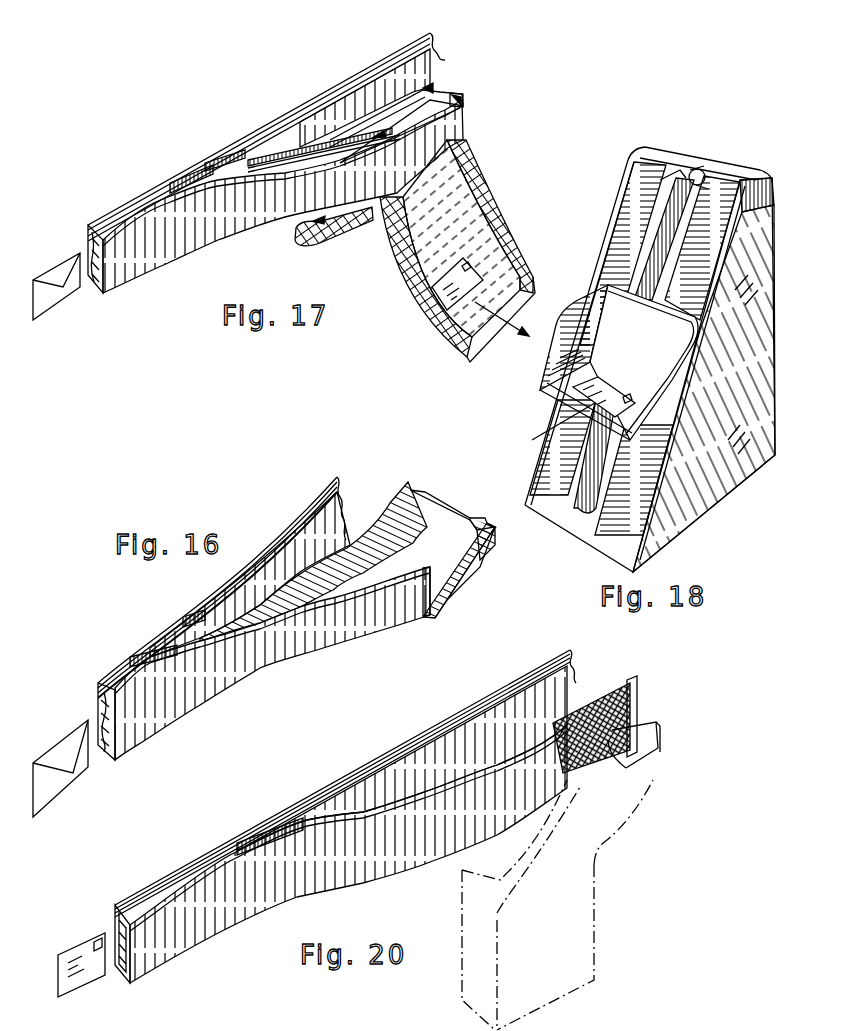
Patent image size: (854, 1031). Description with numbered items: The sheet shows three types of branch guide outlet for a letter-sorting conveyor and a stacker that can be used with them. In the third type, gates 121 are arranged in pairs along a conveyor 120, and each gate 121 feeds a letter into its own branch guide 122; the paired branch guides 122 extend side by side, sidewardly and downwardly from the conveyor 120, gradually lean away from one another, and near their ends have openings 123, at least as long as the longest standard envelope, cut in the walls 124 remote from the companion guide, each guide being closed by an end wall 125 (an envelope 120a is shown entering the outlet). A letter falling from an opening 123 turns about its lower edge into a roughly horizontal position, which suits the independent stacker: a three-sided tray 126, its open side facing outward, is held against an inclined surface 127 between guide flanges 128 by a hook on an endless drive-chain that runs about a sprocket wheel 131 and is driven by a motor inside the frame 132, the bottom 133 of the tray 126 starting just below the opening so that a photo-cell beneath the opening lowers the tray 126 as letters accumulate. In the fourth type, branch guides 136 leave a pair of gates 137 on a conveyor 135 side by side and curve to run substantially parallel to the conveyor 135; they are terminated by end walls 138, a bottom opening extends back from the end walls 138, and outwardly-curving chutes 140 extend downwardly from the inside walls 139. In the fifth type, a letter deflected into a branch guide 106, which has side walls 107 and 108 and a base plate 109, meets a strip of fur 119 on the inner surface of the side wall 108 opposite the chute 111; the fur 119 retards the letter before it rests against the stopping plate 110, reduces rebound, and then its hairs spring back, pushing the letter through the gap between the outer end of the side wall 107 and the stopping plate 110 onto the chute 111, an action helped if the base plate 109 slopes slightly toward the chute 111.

In FIG. 17, the conveyor 135 is at (133, 252).
In FIG. 17, the branch guides 136 is at (290, 122).
In FIG. 17, the gates 137 is at (193, 182).
In FIG. 17, the end walls 138 is at (430, 85).
In FIG. 17, the inside walls 139 is at (452, 88).
In FIG. 17, the outwardly-curving chutes 140 is at (450, 215).
In FIG. 18, the three-sided tray 126 is at (586, 313).
In FIG. 18, the inclined surface 127 is at (643, 200).
In FIG. 18, the guide flanges 128 is at (611, 224).
In FIG. 18, the sprocket wheel 131 is at (707, 180).
In FIG. 18, the frame 132 is at (715, 498).
In FIG. 18, the bottom 133 is at (551, 404).
In FIG. 16, the conveyor 120 is at (313, 503).
In FIG. 16, the envelope 120a is at (76, 775).
In FIG. 16, the gates 121 is at (206, 608).
In FIG. 16, the branch guides 122 is at (338, 637).
In FIG. 16, the openings 123 is at (388, 518).
In FIG. 16, the walls 124 is at (375, 535).
In FIG. 16, the end wall 125 is at (416, 493).
In FIG. 20, the branch guide 106 is at (316, 890).
In FIG. 20, the side wall 107 is at (436, 815).
In FIG. 20, the side wall 108 is at (603, 693).
In FIG. 20, the base plate 109 is at (625, 766).
In FIG. 20, the stopping plate 110 is at (641, 690).
In FIG. 20, the chute 111 is at (628, 818).
In FIG. 20, the strip of fur 119 is at (633, 698).